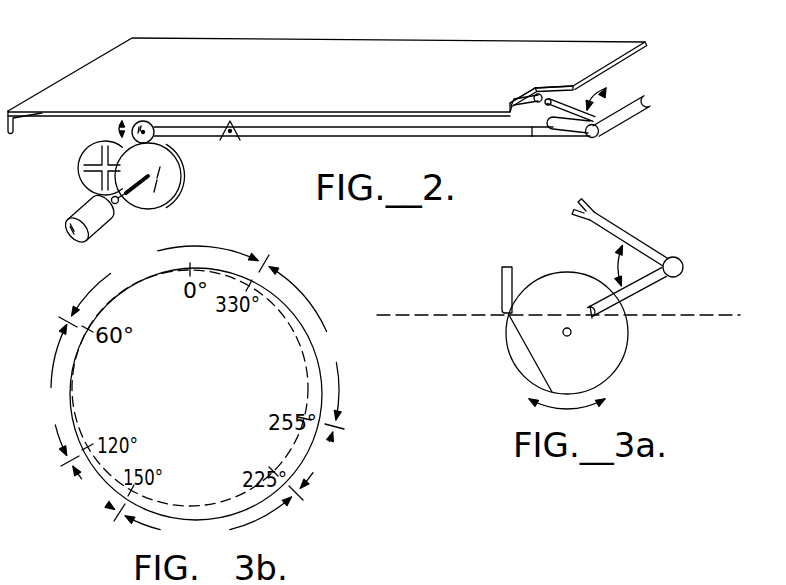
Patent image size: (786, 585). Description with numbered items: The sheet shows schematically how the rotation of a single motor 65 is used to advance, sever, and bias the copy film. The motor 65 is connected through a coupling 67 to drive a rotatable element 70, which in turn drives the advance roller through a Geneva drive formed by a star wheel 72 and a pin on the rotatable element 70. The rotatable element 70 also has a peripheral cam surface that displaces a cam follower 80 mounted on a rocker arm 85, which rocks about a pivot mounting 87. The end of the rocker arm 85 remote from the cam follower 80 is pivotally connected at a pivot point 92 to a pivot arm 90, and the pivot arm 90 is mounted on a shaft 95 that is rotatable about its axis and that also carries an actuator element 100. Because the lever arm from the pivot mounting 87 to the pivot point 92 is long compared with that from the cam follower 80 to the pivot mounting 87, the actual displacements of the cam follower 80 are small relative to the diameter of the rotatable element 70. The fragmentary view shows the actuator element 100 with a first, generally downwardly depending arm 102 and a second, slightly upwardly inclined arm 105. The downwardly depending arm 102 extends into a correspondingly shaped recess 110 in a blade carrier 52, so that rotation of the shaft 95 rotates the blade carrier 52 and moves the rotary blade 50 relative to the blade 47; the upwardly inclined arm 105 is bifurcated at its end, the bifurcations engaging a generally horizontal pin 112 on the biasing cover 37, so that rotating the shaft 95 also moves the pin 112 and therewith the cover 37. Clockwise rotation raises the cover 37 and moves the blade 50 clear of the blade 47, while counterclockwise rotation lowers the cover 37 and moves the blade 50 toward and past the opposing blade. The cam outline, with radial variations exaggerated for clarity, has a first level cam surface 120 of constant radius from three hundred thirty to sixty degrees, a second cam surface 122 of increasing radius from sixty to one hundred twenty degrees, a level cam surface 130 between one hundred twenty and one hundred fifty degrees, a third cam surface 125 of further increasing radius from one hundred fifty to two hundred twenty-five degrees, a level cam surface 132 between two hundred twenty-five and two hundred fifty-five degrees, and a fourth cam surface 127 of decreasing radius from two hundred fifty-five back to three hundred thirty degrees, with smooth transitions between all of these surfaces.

In FIG. 2, the biasing cover 37 is at (450, 50).
In FIG. 2, the pin 112 is at (553, 86).
In FIG. 2, the rocker arm 85 is at (318, 137).
In FIG. 2, the pivot point 92 is at (532, 138).
In FIG. 2, the pivot arm 90 is at (568, 137).
In FIG. 2, the shaft 95 is at (633, 110).
In FIG. 3A, the shaft 95 is at (683, 268).
In FIG. 2, the actuator element 100 is at (604, 87).
In FIG. 3A, the actuator element 100 is at (684, 246).
In FIG. 2, the pivot mounting 87 is at (235, 140).
In FIG. 2, the cam follower 80 is at (142, 121).
In FIG. 2, the star wheel 72 is at (102, 148).
In FIG. 2, the rotatable element 70 is at (168, 186).
In FIG. 2, the coupling 67 is at (118, 203).
In FIG. 2, the motor 65 is at (90, 206).
In FIG. 3A, the blade carrier 52 is at (597, 368).
In FIG. 3A, the rotary blade 50 is at (527, 353).
In FIG. 3A, the blade 47 is at (500, 287).
In FIG. 3A, the downwardly depending arm 102 is at (650, 288).
In FIG. 3A, the upwardly inclined arm 105 is at (620, 223).
In FIG. 3A, the recess 110 is at (597, 320).
In FIG. 3B, the first level cam surface 120 is at (165, 281).
In FIG. 3B, the fourth cam surface 127 is at (308, 343).
In FIG. 3B, the level cam surface 132 is at (321, 460).
In FIG. 3B, the third cam surface 125 is at (230, 531).
In FIG. 3B, the level cam surface 130 is at (94, 487).
In FIG. 3B, the second cam surface 122 is at (50, 390).